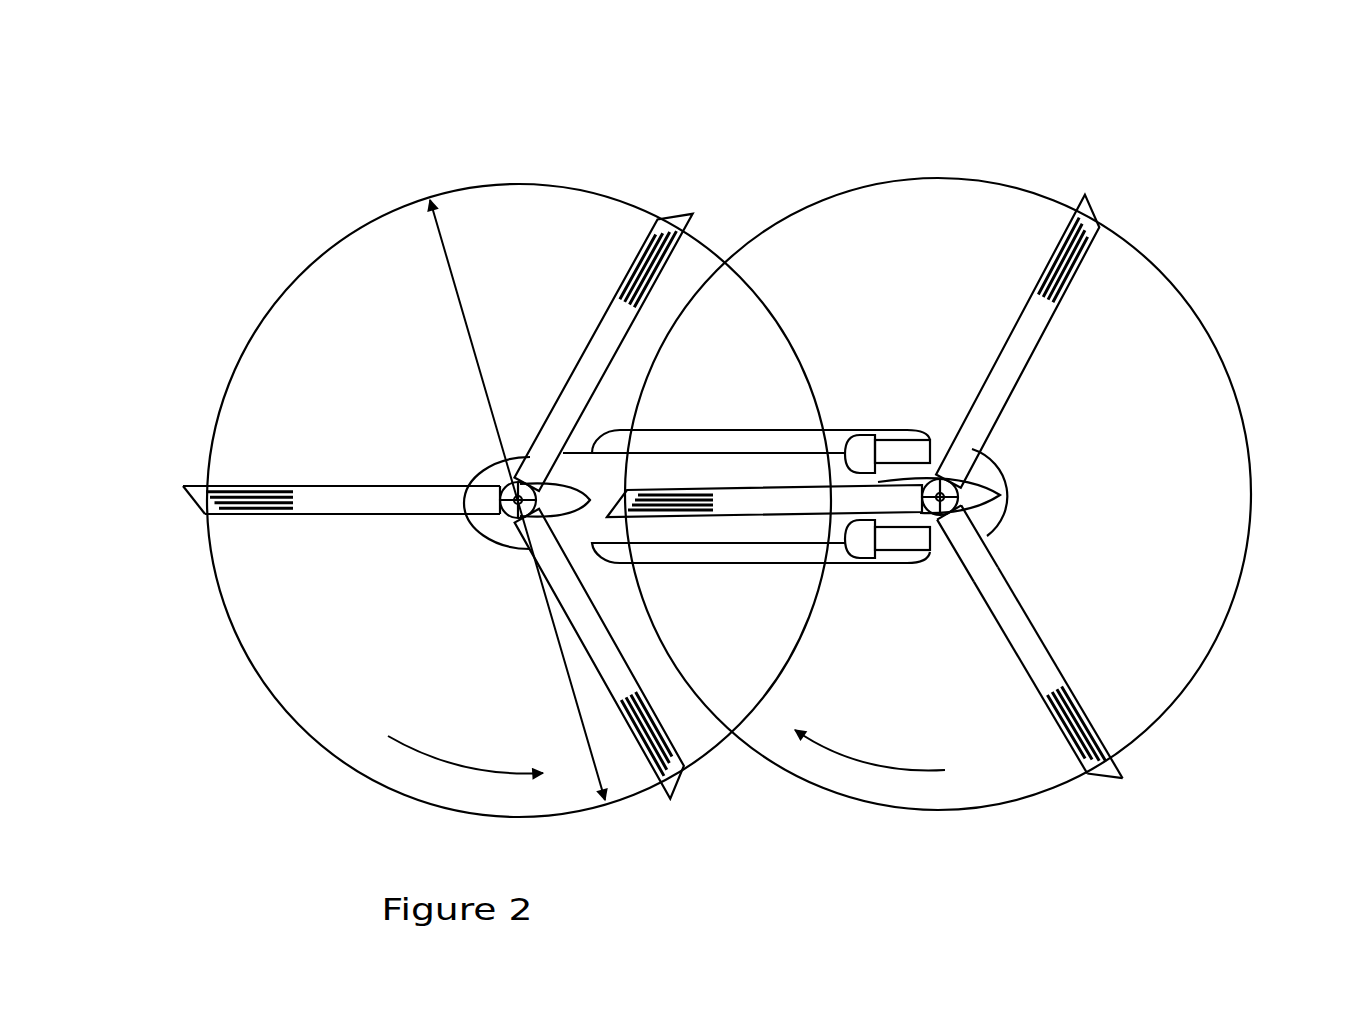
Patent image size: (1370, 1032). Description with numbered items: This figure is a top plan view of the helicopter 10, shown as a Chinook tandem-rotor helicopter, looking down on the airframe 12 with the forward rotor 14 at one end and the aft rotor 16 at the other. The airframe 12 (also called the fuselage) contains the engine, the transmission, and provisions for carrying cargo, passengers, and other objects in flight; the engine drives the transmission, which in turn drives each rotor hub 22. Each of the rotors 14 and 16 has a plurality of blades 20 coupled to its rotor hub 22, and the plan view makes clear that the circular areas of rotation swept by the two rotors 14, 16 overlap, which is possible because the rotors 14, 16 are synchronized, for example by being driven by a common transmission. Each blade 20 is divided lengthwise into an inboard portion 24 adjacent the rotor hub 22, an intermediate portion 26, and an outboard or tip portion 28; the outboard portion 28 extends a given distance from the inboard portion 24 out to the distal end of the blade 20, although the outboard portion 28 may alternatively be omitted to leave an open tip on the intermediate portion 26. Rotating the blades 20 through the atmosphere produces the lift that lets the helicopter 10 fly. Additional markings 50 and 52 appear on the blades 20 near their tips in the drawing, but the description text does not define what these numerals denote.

The helicopter 10 is at (740, 147).
The airframe 12 is at (793, 432).
The forward rotor 14 is at (262, 265).
The aft rotor 16 is at (1184, 818).
The blades 20 is at (678, 217).
The rotor hub 22 is at (521, 482).
The inboard portion 24 is at (444, 487).
The intermediate portion 26 is at (262, 487).
The outboard portion 28 is at (193, 488).
The blade trailing edge 50 is at (334, 517).
The blade marking region 52 is at (318, 487).